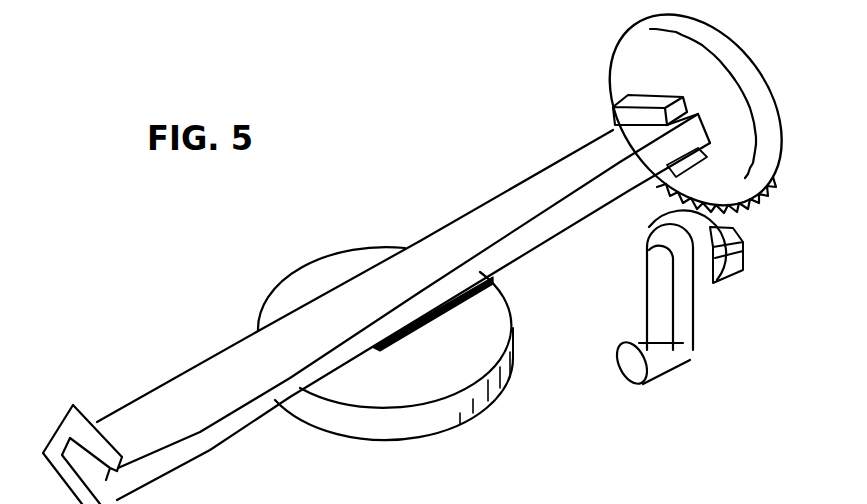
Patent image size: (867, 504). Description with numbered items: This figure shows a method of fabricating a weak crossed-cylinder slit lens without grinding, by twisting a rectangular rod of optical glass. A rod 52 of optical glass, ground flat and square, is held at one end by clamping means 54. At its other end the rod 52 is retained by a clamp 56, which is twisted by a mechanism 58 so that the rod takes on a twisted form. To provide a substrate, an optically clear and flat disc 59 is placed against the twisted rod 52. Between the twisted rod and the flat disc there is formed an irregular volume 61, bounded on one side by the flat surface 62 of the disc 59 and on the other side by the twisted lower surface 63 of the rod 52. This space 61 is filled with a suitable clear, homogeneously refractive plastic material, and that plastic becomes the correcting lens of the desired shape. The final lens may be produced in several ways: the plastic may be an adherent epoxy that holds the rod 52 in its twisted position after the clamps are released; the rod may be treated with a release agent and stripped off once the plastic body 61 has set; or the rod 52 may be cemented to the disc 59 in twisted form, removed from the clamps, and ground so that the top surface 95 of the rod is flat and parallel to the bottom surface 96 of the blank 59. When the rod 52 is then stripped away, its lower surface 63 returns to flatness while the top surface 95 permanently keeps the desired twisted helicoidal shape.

The rod 52 is at (217, 352).
The clamping means 54 is at (72, 439).
The clamp 56 is at (625, 96).
The mechanism 58 is at (737, 67).
The disc 59 is at (291, 268).
The irregular volume 61 is at (487, 280).
The flat surface 62 is at (497, 314).
The lower surface 63 is at (205, 449).
The top surface 95 is at (510, 204).
The bottom surface 96 is at (400, 441).